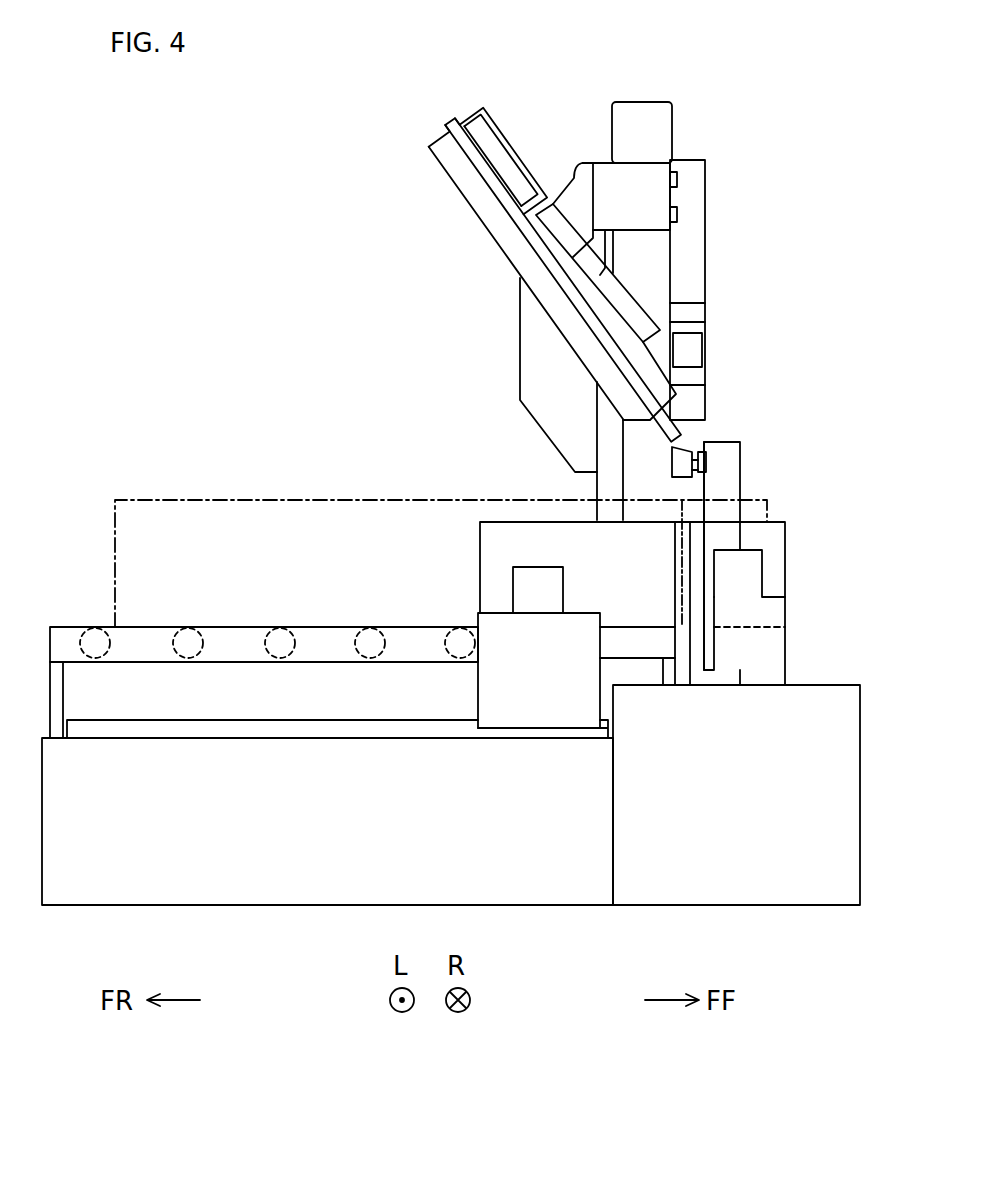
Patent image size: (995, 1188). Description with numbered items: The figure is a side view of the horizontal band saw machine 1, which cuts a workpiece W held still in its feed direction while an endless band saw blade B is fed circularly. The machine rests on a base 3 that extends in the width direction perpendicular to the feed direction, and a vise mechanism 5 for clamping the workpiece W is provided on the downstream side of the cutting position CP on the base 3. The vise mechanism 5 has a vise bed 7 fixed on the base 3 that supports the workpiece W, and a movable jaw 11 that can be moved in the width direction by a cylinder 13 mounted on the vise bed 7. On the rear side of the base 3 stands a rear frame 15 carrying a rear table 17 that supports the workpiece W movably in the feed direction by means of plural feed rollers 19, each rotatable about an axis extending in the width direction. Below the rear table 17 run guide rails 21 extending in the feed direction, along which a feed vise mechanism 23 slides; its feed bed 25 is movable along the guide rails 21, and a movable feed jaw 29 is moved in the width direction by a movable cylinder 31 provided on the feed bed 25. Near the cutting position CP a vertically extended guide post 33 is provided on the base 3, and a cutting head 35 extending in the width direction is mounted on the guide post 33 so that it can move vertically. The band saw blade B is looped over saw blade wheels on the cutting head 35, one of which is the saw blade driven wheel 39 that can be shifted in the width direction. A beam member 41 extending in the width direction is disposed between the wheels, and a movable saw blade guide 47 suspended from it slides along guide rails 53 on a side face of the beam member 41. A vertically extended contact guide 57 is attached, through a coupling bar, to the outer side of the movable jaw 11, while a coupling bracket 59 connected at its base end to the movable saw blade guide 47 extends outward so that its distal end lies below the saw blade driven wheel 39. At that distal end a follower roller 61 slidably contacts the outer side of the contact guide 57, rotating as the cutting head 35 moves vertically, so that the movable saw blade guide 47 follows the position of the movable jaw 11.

The horizontal band saw machine 1 is at (306, 292).
The base 3 is at (792, 898).
The vise mechanism 5 is at (790, 547).
The vise bed 7 is at (740, 673).
The movable jaw 11 is at (780, 522).
The cylinder 13 is at (752, 576).
The rear frame 15 is at (262, 897).
The rear table 17 is at (322, 627).
The feed rollers 19 is at (95, 628).
The guide rails 21 is at (241, 728).
The feed vise mechanism 23 is at (467, 545).
The feed bed 25 is at (533, 712).
The movable feed jaw 29 is at (513, 537).
The movable cylinder 31 is at (537, 603).
The guide post 33 is at (643, 105).
The cutting head 35 is at (452, 188).
The saw blade driven wheel 39 is at (627, 293).
The beam member 41 is at (603, 168).
The movable saw blade guide 47 is at (697, 290).
The guide rails 53 is at (677, 180).
The contact guide 57 is at (740, 460).
The coupling bracket 59 is at (672, 450).
The follower roller 61 is at (713, 447).
The band saw blade B is at (680, 397).
The workpiece W is at (187, 498).
The cutting position CP is at (677, 568).